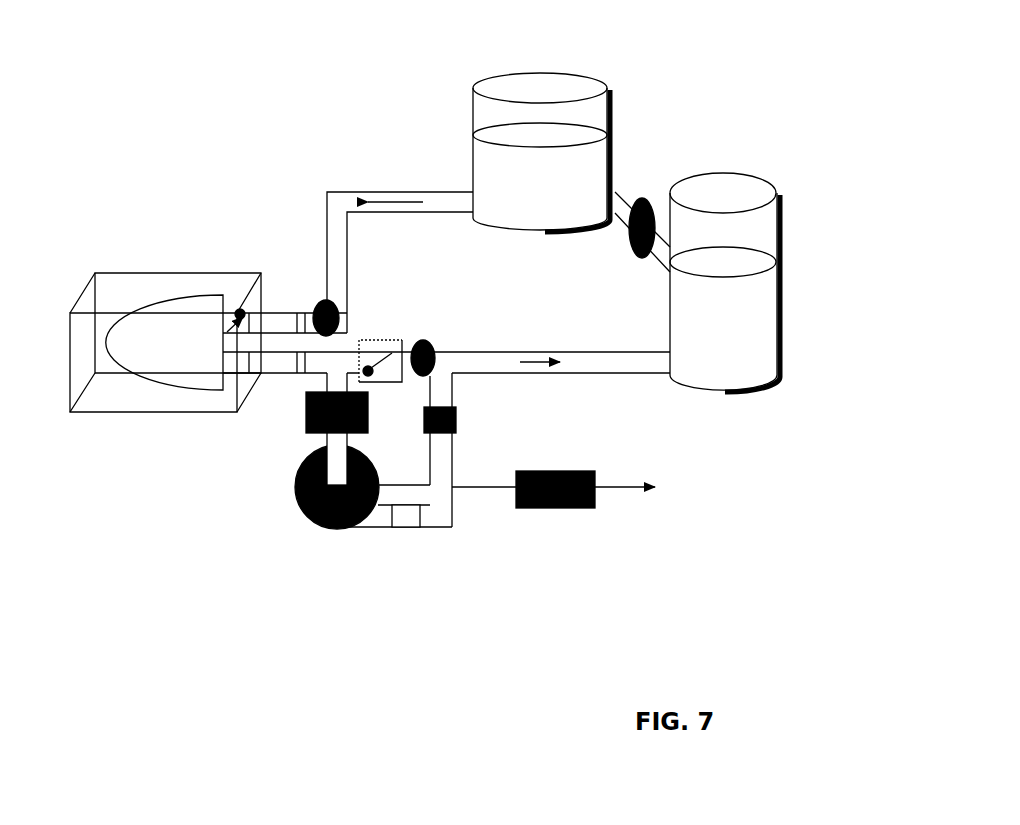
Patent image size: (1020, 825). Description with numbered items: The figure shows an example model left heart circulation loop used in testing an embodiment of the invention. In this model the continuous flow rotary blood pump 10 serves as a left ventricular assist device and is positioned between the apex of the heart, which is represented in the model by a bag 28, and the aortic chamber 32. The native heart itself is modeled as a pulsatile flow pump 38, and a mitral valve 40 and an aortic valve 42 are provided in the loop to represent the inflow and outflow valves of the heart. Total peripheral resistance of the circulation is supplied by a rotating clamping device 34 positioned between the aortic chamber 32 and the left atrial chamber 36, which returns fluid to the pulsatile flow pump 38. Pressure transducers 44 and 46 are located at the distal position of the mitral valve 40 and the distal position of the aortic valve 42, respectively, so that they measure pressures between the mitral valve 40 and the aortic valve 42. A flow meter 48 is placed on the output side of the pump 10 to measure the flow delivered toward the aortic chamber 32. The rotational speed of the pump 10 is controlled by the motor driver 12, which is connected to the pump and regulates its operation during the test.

The continuous flow rotary blood pump 10 is at (297, 497).
The motor driver 12 is at (607, 519).
The bag 28 is at (303, 415).
The aortic chamber 32 is at (623, 302).
The rotating clamping device 34 is at (642, 190).
The left atrial chamber 36 is at (468, 203).
The pulsatile flow pump 38 is at (349, 312).
The mitral valve 40 is at (256, 302).
The aortic valve 42 is at (391, 338).
The pressure transducer 44 is at (313, 302).
The pressure transducer 46 is at (285, 132).
The flow meter 48 is at (460, 418).